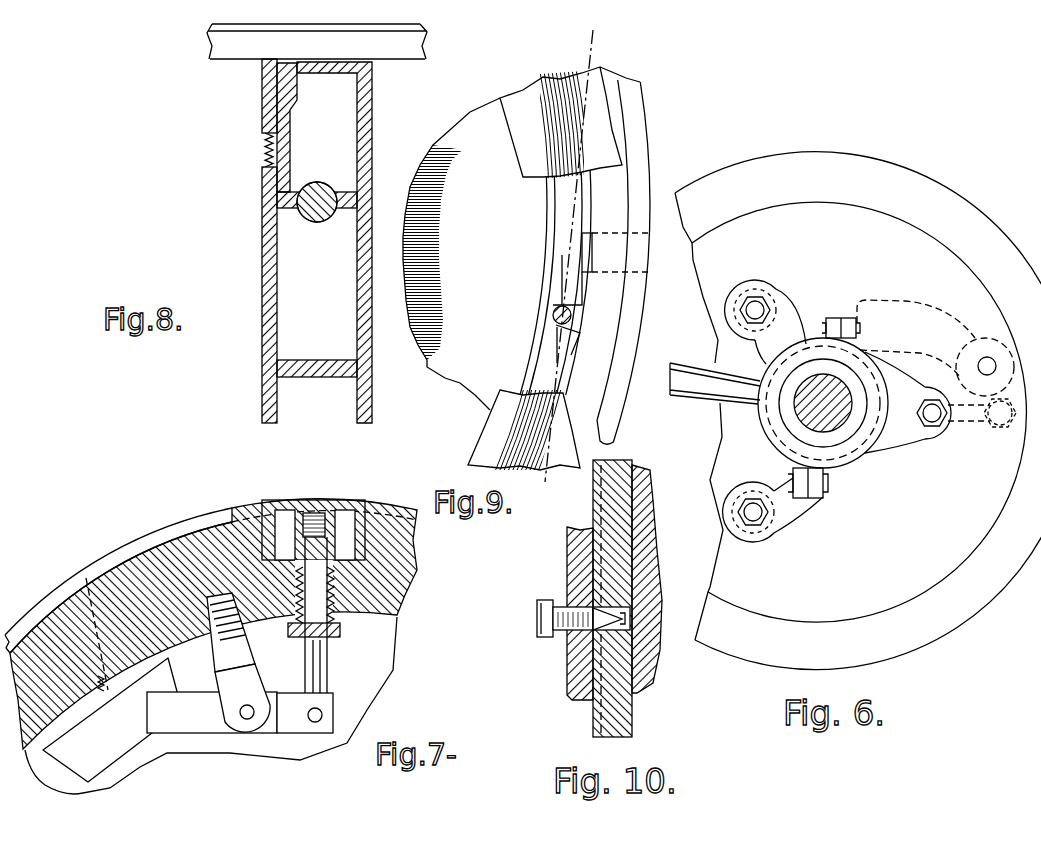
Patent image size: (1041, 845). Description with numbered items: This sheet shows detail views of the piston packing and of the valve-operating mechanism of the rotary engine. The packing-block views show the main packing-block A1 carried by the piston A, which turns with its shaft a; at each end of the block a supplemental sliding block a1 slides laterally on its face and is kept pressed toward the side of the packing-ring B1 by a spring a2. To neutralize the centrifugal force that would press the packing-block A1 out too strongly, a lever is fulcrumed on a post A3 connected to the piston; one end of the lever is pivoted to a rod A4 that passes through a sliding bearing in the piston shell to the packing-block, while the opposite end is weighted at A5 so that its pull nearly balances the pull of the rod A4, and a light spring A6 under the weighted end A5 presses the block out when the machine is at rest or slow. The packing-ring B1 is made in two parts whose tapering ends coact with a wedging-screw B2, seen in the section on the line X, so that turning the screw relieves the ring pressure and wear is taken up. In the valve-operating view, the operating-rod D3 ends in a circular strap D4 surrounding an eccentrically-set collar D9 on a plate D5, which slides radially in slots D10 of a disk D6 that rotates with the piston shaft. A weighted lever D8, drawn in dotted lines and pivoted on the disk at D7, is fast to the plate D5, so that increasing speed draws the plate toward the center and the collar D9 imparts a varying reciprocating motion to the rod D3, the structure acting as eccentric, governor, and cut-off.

In FIG. 7, the piston A is at (410, 567).
In FIG. 8, the main packing-block A1 is at (324, 242).
In FIG. 7, the main packing-block A1 is at (283, 506).
In FIG. 7, the post A3 is at (216, 663).
In FIG. 8, the rod A4 is at (318, 184).
In FIG. 7, the rod A4 is at (320, 660).
In FIG. 7, the weighted end A5 is at (211, 705).
In FIG. 7, the light spring A6 is at (82, 568).
In FIG. 6, the shaft a is at (832, 396).
In FIG. 8, the supplemental sliding block a1 is at (272, 100).
In FIG. 8, the spring a2 is at (268, 150).
In FIG. 7, the spring a2 is at (82, 576).
In FIG. 9, the packing-ring B1 is at (560, 258).
In FIG. 10, the packing-ring B1 is at (584, 704).
In FIG. 9, the wedging-screw B2 is at (551, 313).
In FIG. 10, the wedging-screw B2 is at (558, 636).
In FIG. 6, the operating-rod D3 is at (693, 387).
In FIG. 6, the circular strap D4 is at (835, 468).
In FIG. 6, the plate D5 is at (790, 327).
In FIG. 6, the disk D6 is at (770, 308).
In FIG. 6, the pivot D7 is at (978, 361).
In FIG. 6, the weighted lever D8 is at (906, 314).
In FIG. 6, the eccentrically-set collar D9 is at (790, 455).
In FIG. 6, the slots D10 is at (745, 318).
In FIG. 9, the section line x x X is at (560, 493).
In FIG. 10, the section line x x X is at (542, 491).